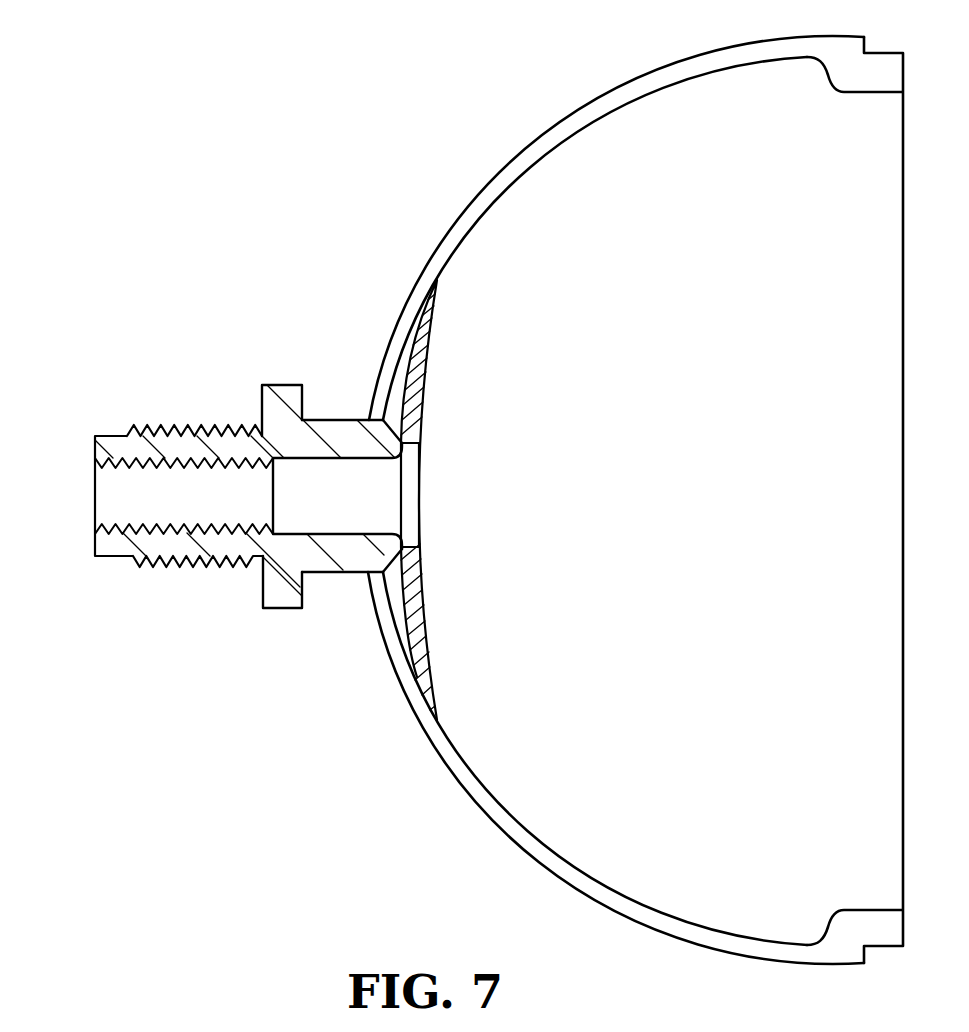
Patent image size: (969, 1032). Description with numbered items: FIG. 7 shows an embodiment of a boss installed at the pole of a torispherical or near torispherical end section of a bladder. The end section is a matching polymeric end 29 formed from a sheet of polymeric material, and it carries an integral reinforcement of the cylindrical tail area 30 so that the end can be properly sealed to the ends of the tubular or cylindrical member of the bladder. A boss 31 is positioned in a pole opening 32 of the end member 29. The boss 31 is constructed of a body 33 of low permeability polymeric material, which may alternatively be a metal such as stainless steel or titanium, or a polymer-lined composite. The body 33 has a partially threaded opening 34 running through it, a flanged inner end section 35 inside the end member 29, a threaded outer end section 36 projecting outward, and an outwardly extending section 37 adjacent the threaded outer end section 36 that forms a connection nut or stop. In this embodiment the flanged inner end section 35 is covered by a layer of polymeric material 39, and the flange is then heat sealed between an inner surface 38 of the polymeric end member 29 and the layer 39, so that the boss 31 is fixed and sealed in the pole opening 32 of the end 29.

The polymeric end 29 is at (610, 90).
The integral reinforcement of the cylindrical tail area 30 is at (862, 93).
The boss 31 is at (176, 371).
The pole opening 32 is at (383, 414).
The body 33 is at (348, 573).
The partially threaded opening 34 is at (131, 524).
The flanged inner end section 35 is at (407, 374).
The threaded outer end section 36 is at (176, 568).
The outwardly extending section 37 is at (263, 594).
The inner surface 38 is at (410, 606).
The layer of polymeric material 39 is at (427, 568).